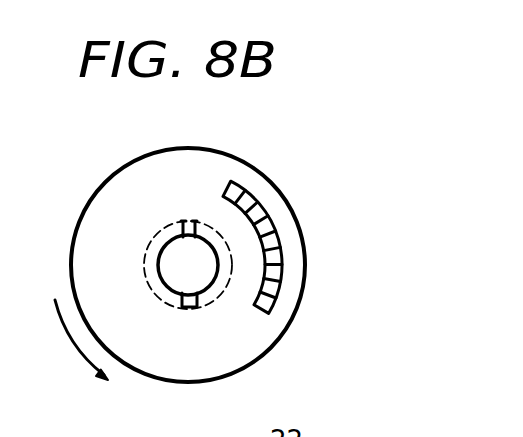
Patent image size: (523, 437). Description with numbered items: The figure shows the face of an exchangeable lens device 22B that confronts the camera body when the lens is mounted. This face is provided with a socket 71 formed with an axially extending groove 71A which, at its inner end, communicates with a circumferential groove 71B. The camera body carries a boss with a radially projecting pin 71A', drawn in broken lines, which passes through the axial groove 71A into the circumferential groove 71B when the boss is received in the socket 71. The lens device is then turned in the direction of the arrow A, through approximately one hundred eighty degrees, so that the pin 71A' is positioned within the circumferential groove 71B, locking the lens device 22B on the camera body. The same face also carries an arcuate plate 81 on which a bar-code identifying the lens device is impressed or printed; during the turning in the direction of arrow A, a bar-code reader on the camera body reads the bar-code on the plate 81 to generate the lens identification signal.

The exchangeable lens device 22B is at (290, 328).
The socket 71 is at (166, 266).
The axially extending groove 71A is at (216, 327).
The radially projecting pin 71A' is at (163, 203).
The circumferential groove 71B is at (143, 259).
The arcuate plate 81 is at (264, 207).
The arrow A is at (70, 345).